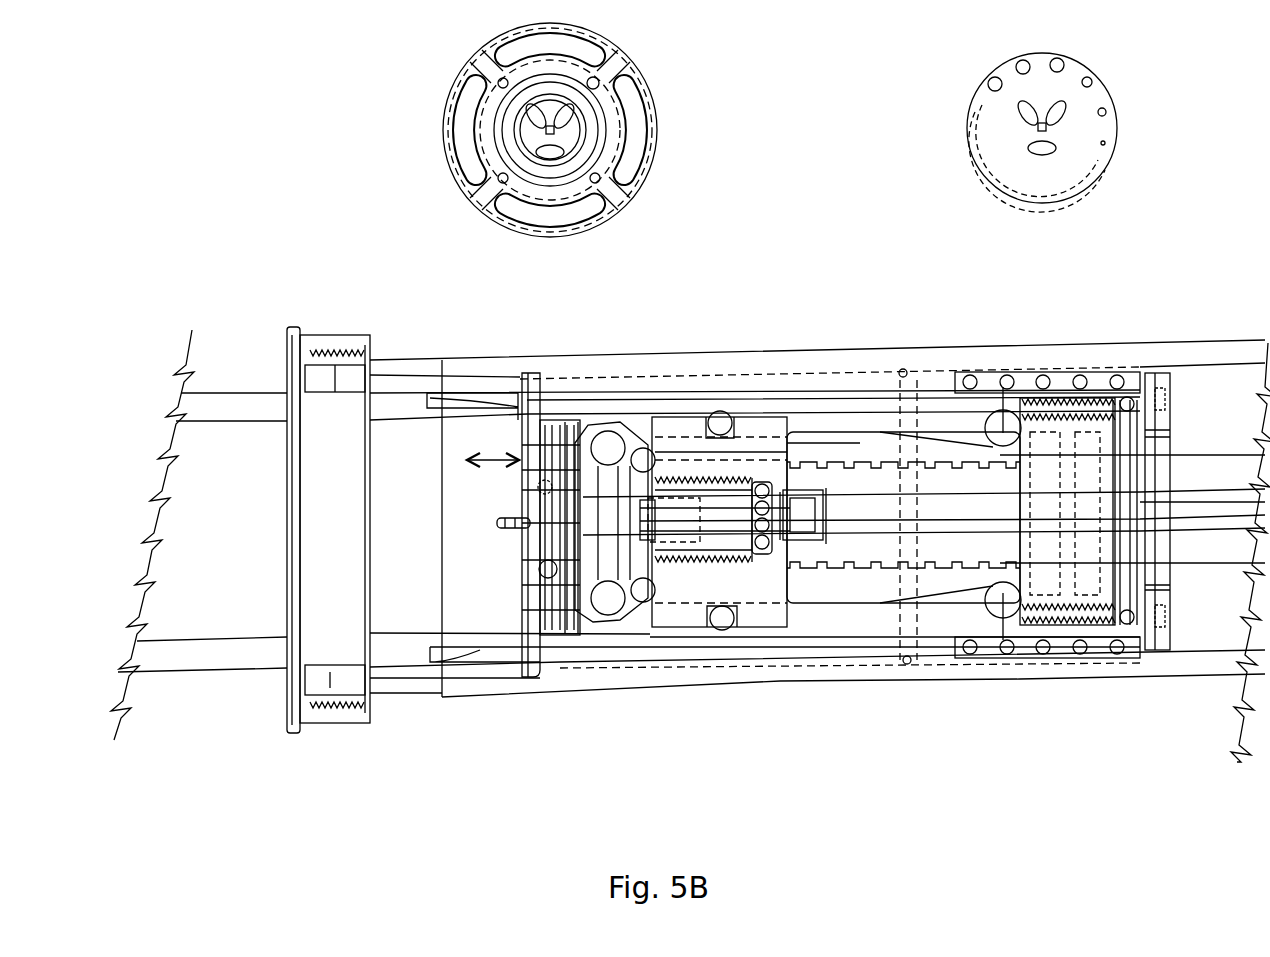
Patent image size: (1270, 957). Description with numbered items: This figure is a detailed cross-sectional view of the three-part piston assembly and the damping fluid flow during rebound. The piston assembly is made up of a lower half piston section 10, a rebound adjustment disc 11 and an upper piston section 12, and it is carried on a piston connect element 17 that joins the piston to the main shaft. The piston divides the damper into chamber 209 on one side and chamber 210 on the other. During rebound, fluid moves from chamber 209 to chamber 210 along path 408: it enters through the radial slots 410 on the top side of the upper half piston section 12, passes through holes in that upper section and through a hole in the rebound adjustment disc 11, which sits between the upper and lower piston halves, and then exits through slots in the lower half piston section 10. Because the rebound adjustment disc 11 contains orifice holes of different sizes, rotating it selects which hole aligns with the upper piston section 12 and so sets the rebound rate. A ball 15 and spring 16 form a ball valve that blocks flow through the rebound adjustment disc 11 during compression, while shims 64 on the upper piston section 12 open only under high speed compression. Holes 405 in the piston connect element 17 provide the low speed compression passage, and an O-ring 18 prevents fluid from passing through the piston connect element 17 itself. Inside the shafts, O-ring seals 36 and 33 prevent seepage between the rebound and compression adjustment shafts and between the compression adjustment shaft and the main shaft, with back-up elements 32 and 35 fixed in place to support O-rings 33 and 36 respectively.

The lower half piston section 10 is at (520, 418).
The rebound adjustment disc 11 is at (1000, 140).
The upper piston section 12 is at (566, 418).
The piston connect element 17 is at (610, 517).
The holes 405 is at (648, 478).
The chamber 209 is at (878, 440).
The radial slots 410 is at (615, 67).
The chamber 210 is at (493, 590).
The ball 15 is at (553, 567).
The spring 16 is at (582, 597).
The O-ring 18 is at (612, 600).
The shims 64 is at (613, 600).
The O-ring seal 36 is at (765, 535).
The O-ring seal 33 is at (770, 548).
The back-up element 32 is at (797, 530).
The back-up element 35 is at (815, 548).
The path 408 is at (850, 443).